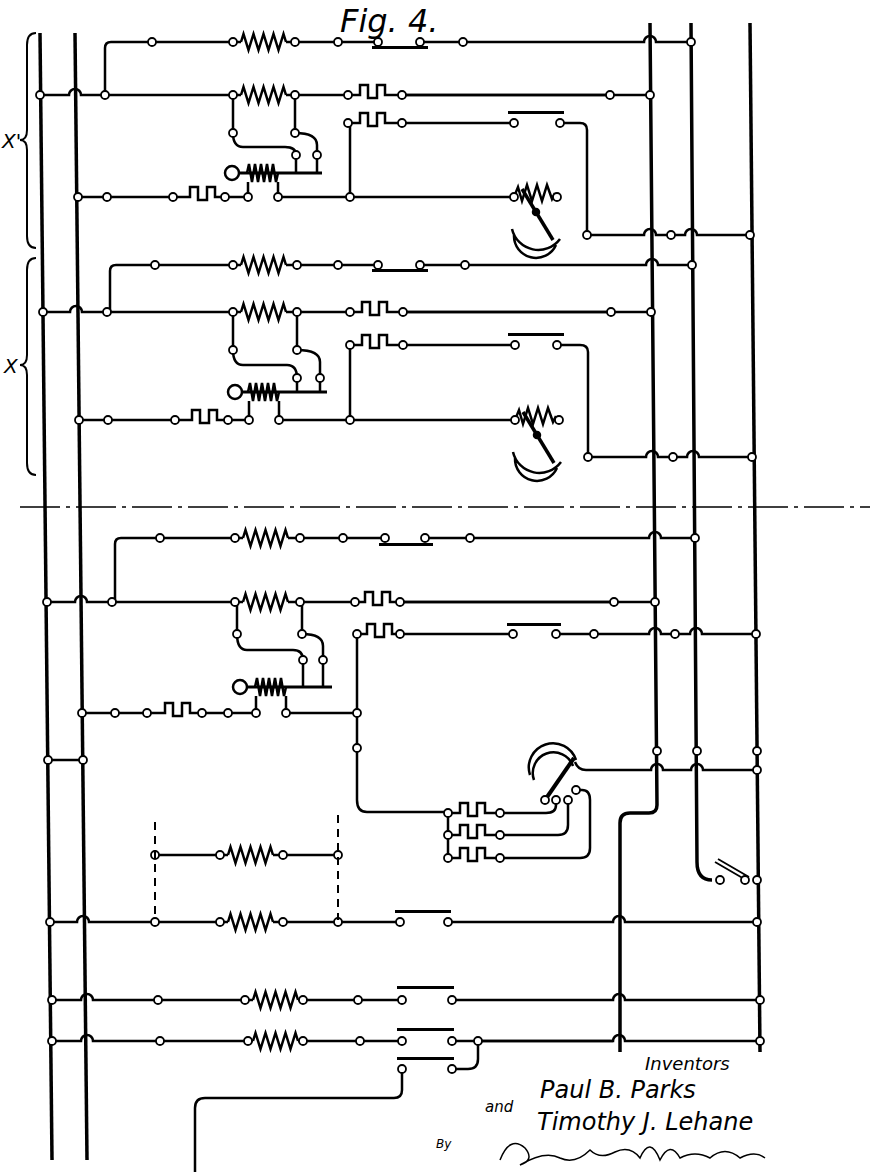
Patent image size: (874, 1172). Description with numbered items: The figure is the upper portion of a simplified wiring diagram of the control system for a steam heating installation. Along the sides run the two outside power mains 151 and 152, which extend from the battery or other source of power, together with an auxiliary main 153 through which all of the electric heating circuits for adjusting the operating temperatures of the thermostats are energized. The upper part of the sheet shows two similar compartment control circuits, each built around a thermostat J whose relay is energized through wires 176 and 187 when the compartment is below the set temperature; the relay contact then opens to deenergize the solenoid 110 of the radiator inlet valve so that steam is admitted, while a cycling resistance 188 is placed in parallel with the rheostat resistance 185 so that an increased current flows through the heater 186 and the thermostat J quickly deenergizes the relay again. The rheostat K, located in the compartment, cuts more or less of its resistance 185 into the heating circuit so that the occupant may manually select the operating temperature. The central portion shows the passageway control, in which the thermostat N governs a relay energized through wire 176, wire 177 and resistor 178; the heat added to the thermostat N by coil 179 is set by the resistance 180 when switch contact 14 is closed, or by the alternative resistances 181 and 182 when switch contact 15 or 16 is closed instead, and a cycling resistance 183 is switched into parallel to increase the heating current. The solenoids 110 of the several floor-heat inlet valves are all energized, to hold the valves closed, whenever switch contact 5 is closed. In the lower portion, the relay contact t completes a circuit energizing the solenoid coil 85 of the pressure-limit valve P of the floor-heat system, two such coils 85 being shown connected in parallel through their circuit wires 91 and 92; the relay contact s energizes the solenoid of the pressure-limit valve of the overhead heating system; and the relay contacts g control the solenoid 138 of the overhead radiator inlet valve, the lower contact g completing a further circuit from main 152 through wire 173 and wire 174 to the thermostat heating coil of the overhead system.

The solenoid 110 is at (240, 50).
The wire 187 is at (522, 92).
The cycling resistance 188 is at (393, 129).
The rheostat resistance 185 is at (533, 185).
The heater 186 is at (266, 420).
The power main 152 is at (753, 397).
The power main 151 is at (46, 664).
The auxiliary main 153 is at (84, 823).
The wire 176 is at (654, 681).
The wire 177 is at (515, 596).
The resistor 178 is at (372, 592).
The heating coil 179 is at (276, 680).
The cycling resistance 183 is at (384, 646).
The resistance 180 is at (473, 806).
The alternative resistance 181 is at (462, 835).
The alternative resistance 182 is at (468, 868).
The switch contact 15 is at (540, 794).
The switch contact 16 is at (582, 790).
The switch contact 14 is at (558, 813).
The switch contact 5 is at (732, 866).
The solenoid coil 85 is at (252, 848).
The circuit wire 91 is at (180, 856).
The circuit wire 92 is at (316, 846).
The solenoid 138 is at (270, 1052).
The wire 173 is at (560, 1044).
The wire 174 is at (197, 1144).
The thermostat J is at (280, 88).
The rheostat K is at (515, 220).
The thermostat N is at (282, 596).
The pressure-limit valve P is at (229, 911).
The relay contact t is at (423, 898).
The relay contact s is at (425, 976).
The relay contact g is at (425, 1046).